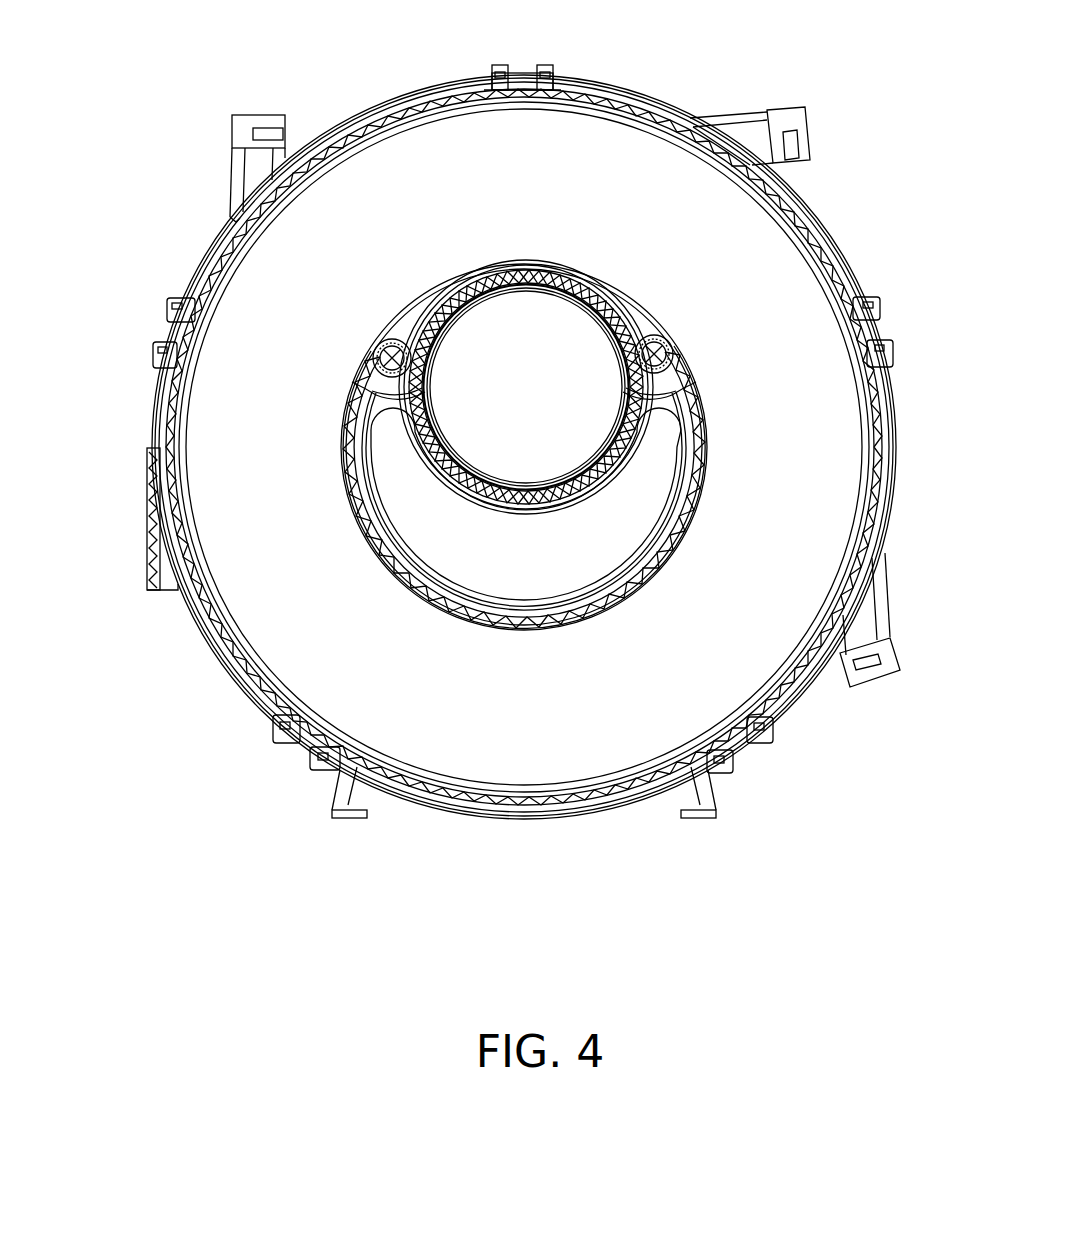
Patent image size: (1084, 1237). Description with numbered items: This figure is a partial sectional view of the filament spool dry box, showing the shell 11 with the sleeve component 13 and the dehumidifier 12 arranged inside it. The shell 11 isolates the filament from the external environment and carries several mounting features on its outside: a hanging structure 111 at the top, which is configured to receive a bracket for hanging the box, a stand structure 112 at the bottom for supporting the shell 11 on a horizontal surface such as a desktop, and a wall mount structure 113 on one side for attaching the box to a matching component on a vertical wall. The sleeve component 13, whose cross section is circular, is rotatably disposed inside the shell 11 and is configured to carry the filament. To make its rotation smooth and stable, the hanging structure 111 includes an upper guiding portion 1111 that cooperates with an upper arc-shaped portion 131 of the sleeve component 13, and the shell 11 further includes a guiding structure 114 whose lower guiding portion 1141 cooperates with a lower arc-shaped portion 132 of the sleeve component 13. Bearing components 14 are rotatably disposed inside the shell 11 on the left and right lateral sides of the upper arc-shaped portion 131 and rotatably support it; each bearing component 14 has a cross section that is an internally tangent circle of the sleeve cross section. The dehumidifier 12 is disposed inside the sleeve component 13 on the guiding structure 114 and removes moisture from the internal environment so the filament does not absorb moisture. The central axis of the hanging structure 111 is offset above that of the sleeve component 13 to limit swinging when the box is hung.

The shell 11 is at (848, 227).
The hanging structure 111 is at (526, 257).
The upper guiding portion 1111 is at (542, 264).
The stand structure 112 is at (343, 843).
The wall mount structure 113 is at (134, 576).
The guiding structure 114 is at (524, 535).
The lower guiding portion 1141 is at (513, 616).
The dehumidifier 12 is at (595, 597).
The sleeve component 13 is at (535, 496).
The upper arc-shaped portion 131 is at (514, 262).
The lower arc-shaped portion 132 is at (536, 630).
The bearing component 14 is at (391, 338).